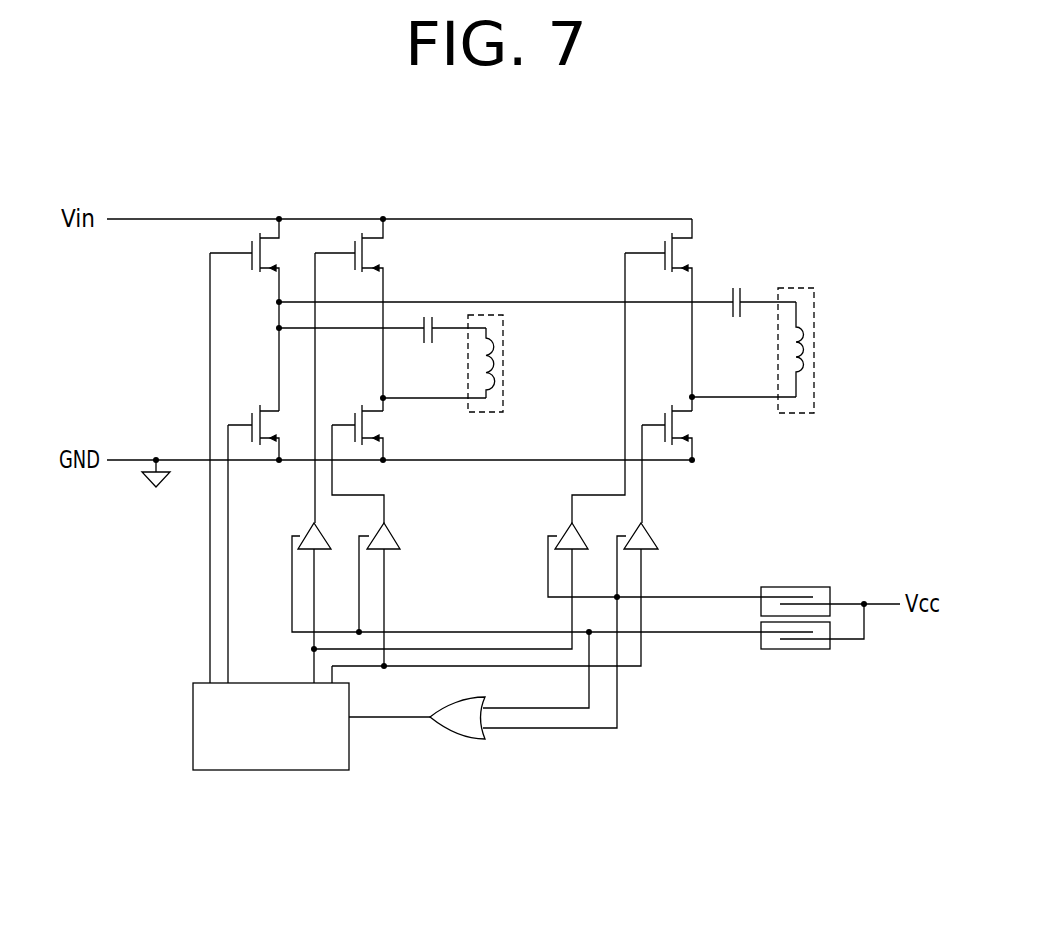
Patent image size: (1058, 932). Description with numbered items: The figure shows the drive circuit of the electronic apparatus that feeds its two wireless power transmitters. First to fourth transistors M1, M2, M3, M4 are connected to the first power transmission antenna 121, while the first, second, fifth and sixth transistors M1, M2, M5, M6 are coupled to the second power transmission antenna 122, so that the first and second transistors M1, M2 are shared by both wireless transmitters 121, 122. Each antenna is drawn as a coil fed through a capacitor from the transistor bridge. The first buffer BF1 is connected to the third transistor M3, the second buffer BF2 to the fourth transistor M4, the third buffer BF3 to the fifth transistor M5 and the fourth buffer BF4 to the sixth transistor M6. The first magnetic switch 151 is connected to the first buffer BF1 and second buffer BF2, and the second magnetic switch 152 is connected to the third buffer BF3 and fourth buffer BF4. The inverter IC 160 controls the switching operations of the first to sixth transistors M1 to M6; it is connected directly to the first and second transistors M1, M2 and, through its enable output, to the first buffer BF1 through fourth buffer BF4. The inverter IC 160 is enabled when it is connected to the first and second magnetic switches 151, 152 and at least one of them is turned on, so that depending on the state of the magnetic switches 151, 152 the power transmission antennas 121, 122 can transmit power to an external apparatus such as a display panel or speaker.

The first wireless power transmitter 121 is at (482, 315).
The second wireless power transmitter 122 is at (793, 288).
The first magnetic switch 151 is at (797, 649).
The second magnetic switch 152 is at (795, 587).
The inverter IC 160 is at (193, 726).
The first transistor M1 is at (244, 451).
The second transistor M2 is at (248, 540).
The third transistor M3 is at (349, 371).
The fourth transistor M4 is at (353, 460).
The fifth transistor M5 is at (632, 371).
The sixth transistor M6 is at (661, 460).
The first buffer BF1 is at (514, 594).
The second buffer BF2 is at (486, 594).
The third buffer BF3 is at (537, 577).
The fourth buffer BF4 is at (582, 617).